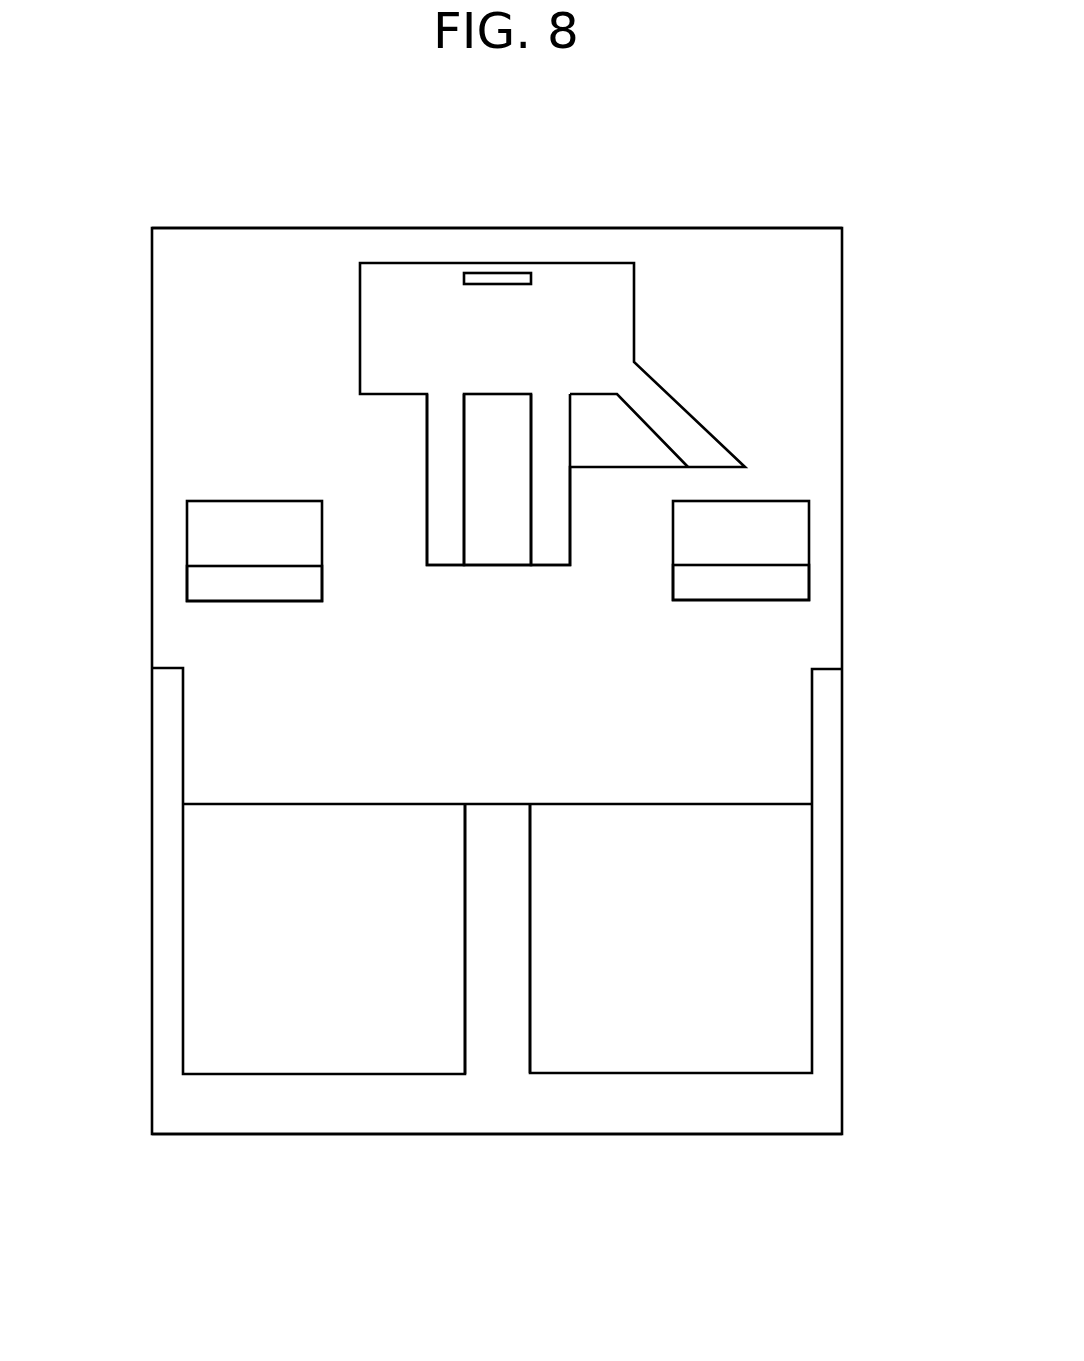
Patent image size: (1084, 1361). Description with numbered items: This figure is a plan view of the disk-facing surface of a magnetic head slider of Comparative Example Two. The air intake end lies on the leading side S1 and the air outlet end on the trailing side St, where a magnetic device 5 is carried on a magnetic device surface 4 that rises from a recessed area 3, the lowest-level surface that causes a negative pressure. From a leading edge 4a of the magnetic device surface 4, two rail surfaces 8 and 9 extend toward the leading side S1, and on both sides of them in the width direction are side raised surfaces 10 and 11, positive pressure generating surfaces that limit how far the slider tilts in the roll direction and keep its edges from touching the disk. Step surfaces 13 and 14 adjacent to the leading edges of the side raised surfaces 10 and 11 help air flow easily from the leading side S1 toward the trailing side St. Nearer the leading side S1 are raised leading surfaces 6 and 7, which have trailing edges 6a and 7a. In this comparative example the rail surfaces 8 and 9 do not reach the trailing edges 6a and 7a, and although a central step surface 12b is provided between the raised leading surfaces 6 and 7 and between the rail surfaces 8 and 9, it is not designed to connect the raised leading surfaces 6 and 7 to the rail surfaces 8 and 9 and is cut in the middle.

The recessed area 3 is at (813, 356).
The magnetic device surface 4 is at (587, 308).
The leading edge of the magnetic device surface 4a is at (495, 401).
The magnetic device 5 is at (507, 277).
The raised leading surface 6 is at (271, 1043).
The trailing edge of raised leading surface 6a is at (275, 805).
The raised leading surface 7 is at (720, 1047).
The trailing edge of raised leading surface 7a is at (720, 805).
The rail surface 8 is at (447, 458).
The rail surface 9 is at (553, 550).
The side raised surface 10 is at (211, 531).
The side raised surface 11 is at (787, 537).
The central step surface 12b is at (507, 493).
The step surface 13 is at (211, 588).
The step surface 14 is at (793, 590).
The trailing side St is at (530, 228).
The leading side S1 is at (598, 1134).